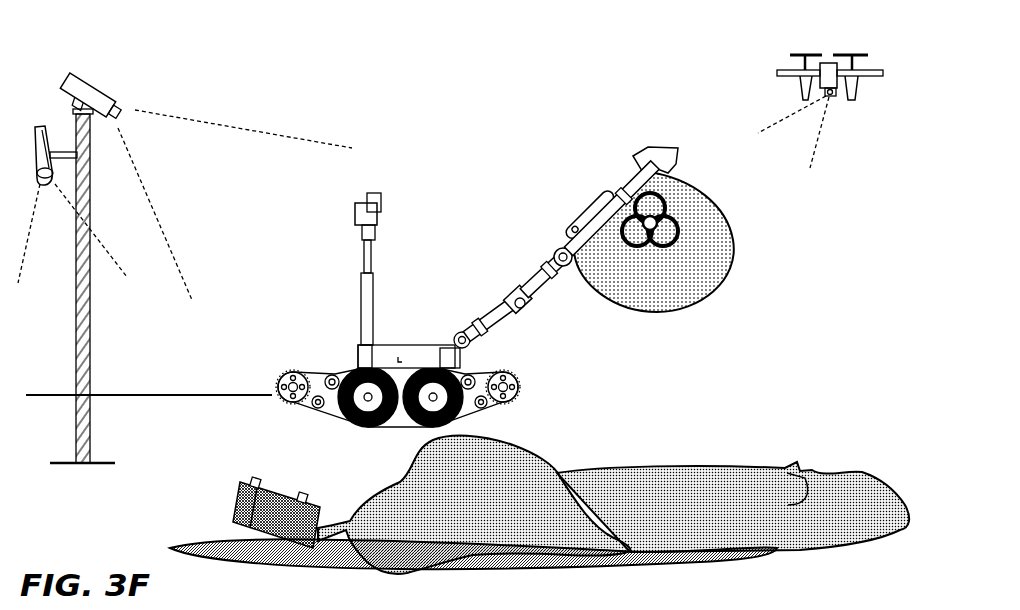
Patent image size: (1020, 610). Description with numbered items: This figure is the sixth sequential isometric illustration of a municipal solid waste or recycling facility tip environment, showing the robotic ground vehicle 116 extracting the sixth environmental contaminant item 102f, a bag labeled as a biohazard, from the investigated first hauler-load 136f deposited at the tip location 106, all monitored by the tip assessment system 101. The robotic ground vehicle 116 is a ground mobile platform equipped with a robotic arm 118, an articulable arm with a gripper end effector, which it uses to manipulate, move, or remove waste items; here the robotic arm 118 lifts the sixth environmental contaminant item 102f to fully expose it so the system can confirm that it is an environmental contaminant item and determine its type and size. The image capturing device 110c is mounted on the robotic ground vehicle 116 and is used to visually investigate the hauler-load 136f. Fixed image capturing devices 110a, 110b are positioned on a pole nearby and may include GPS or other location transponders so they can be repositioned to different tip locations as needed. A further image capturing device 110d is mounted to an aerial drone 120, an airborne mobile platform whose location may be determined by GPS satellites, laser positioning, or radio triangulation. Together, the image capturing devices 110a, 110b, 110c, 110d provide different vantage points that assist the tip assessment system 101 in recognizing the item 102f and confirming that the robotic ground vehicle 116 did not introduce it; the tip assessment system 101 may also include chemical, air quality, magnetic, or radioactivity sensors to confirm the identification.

The tip assessment system 101 is at (66, 378).
The image capturing device 110a is at (97, 92).
The image capturing device 110b is at (37, 124).
The image capturing device 110c is at (383, 206).
The image capturing device 110d is at (835, 94).
The robotic ground vehicle 116 is at (400, 348).
The robotic arm 118 is at (553, 262).
The sixth environmental contaminant item 102f is at (707, 203).
The aerial drone 120 is at (860, 82).
The investigated first hauler-load 136f is at (788, 505).
The municipal solid waste or recycling facility tip location 106 is at (748, 553).